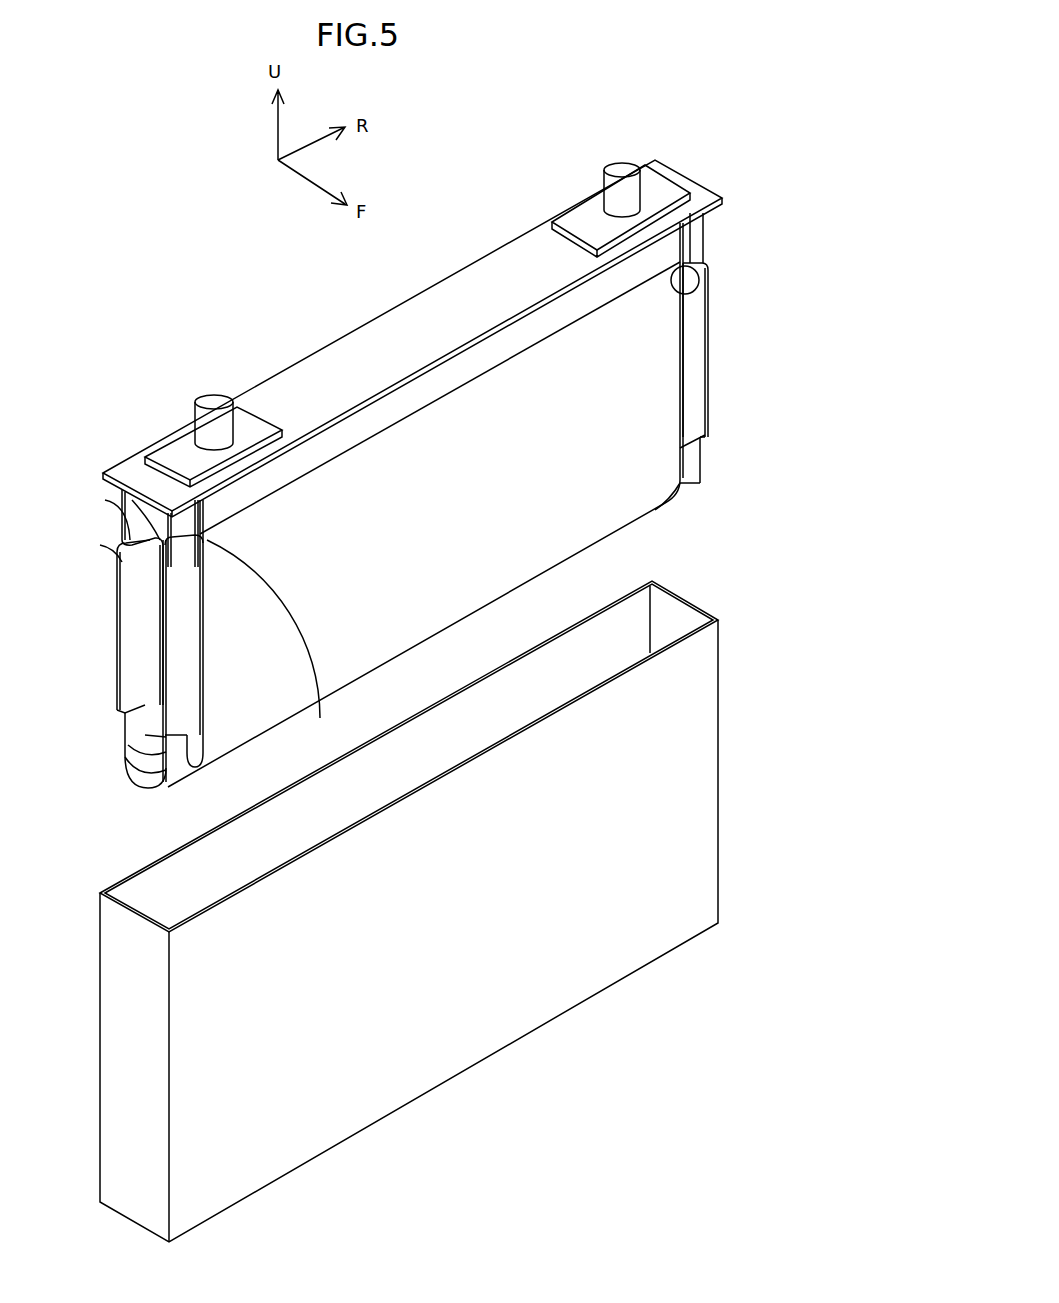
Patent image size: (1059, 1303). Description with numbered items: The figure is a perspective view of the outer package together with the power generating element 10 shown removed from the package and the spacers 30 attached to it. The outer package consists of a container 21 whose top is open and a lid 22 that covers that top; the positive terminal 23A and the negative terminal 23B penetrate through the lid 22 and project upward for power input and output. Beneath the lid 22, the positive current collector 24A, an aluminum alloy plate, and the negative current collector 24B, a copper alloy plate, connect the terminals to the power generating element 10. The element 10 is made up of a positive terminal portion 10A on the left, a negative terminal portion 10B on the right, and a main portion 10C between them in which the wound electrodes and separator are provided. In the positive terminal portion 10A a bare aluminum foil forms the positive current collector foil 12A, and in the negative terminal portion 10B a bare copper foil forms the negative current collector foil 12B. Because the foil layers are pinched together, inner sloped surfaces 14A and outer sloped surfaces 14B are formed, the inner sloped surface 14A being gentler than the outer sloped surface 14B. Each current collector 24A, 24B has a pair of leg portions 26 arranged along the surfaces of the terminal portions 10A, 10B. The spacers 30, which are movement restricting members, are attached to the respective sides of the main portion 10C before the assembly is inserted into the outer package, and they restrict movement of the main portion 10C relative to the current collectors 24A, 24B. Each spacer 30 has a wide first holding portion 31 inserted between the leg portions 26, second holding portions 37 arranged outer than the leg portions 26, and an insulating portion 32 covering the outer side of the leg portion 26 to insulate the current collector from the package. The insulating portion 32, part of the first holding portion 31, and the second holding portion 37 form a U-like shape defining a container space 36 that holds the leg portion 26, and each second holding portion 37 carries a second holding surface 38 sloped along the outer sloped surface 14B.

The power generating element 10 is at (398, 482).
The positive terminal portion 10A is at (188, 775).
The negative terminal portion 10B is at (695, 480).
The main portion 10C is at (472, 578).
The positive current collector foil 12A is at (140, 718).
The negative current collector foil 12B is at (690, 458).
The inner sloped surface 14A is at (165, 735).
The outer sloped surface 14B is at (160, 768).
The container 21 is at (693, 745).
The lid 22 is at (457, 292).
The positive terminal 23A is at (214, 400).
The negative terminal 23B is at (620, 163).
The positive current collector 24A is at (180, 517).
The negative current collector 24B is at (693, 232).
The leg portion 26 is at (148, 510).
The spacer 30 is at (125, 665).
The first holding portion 31 is at (153, 600).
The insulating portion 32 is at (117, 555).
The container space 36 is at (122, 560).
The second holding portion 37 is at (203, 707).
The second holding surface 38 is at (320, 718).